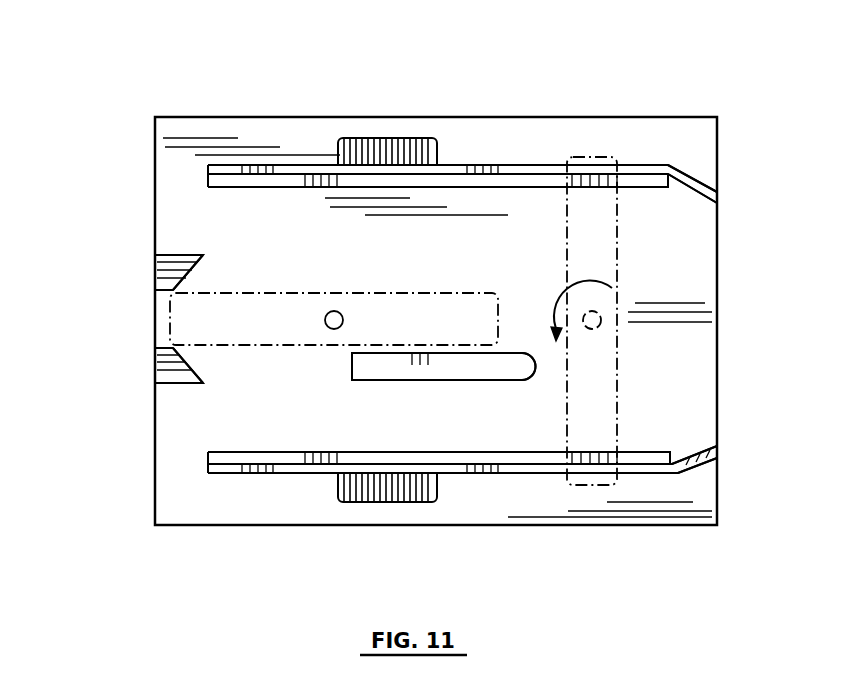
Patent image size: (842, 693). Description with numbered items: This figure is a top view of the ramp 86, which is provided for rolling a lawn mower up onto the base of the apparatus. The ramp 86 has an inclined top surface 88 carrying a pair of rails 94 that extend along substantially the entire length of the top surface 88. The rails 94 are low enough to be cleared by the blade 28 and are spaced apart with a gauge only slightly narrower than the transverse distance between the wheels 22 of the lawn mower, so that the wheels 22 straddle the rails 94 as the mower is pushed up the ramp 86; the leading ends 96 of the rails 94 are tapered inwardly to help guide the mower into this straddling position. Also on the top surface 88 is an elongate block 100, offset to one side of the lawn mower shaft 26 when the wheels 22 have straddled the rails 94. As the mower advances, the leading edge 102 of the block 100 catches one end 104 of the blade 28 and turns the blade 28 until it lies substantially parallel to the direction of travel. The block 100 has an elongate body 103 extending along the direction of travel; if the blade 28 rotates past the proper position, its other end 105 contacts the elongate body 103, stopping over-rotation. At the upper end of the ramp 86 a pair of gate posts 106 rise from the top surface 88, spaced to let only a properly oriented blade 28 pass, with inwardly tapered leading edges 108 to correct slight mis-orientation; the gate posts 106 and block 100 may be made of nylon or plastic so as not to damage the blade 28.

The ramp 86 is at (378, 84).
The inclined top surface 88 is at (200, 133).
The wheels 22 is at (416, 140).
The rails 94 is at (518, 167).
The leading ends 96 is at (700, 176).
The gate posts 106 is at (162, 268).
The ramp surface 108 is at (195, 282).
The end of blade 104 is at (470, 305).
The end of blade 105 is at (248, 318).
The blade 28 is at (605, 262).
The lawn mower shaft 26 is at (598, 325).
The elongate block 100 is at (479, 380).
The leading edge 102 is at (537, 368).
The elongate body 103 is at (383, 352).